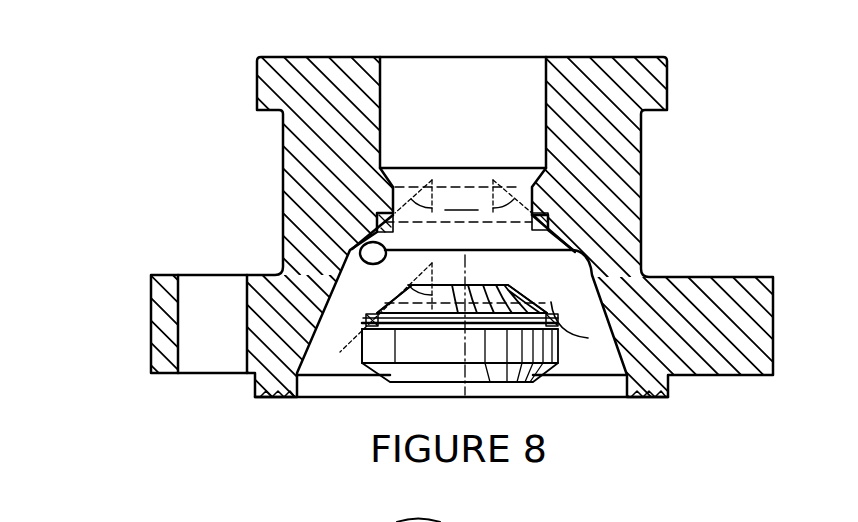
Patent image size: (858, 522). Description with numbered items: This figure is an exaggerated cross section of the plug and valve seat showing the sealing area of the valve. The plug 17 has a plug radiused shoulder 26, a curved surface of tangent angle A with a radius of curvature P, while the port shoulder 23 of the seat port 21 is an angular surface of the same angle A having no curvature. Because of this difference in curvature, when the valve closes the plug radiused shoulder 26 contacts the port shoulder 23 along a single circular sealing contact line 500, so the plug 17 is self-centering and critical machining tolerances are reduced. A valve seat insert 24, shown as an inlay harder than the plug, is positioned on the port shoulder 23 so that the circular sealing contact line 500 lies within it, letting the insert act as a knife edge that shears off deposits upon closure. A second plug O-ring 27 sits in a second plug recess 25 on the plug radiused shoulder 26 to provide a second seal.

The plug 17 is at (508, 383).
The seat port 21 is at (563, 253).
The port shoulder 23 is at (362, 250).
The valve seat insert 24 is at (553, 267).
The second plug recess 25 is at (400, 330).
The plug radiused shoulder 26 is at (392, 316).
The second plug O-ring 27 is at (370, 320).
The circular sealing contact line 500 is at (452, 227).